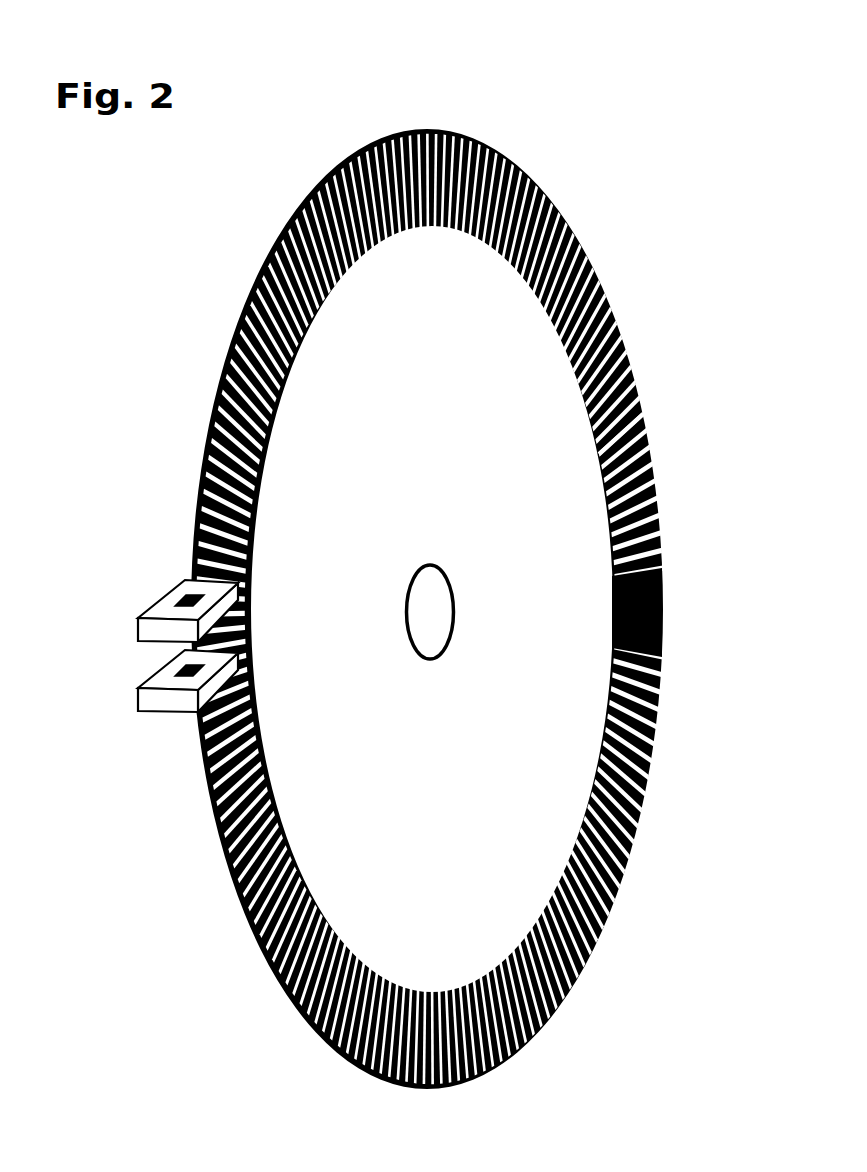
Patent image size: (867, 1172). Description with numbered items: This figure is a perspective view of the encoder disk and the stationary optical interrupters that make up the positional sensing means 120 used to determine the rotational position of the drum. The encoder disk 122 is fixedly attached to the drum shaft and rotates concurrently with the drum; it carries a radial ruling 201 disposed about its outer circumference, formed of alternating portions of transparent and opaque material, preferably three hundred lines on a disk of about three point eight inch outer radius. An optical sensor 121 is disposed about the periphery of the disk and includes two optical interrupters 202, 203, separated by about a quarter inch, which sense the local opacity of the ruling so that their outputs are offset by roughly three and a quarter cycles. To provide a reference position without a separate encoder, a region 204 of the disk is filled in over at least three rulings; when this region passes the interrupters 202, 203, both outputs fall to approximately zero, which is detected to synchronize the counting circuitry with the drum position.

The positional sensing means 120 is at (262, 1062).
The optical sensor 121 is at (137, 540).
The encoder disk 122 is at (440, 128).
The radial ruling 201 is at (650, 410).
The optical interrupter 202 is at (140, 617).
The optical interrupter 203 is at (140, 687).
The filled-in region 204 is at (665, 620).